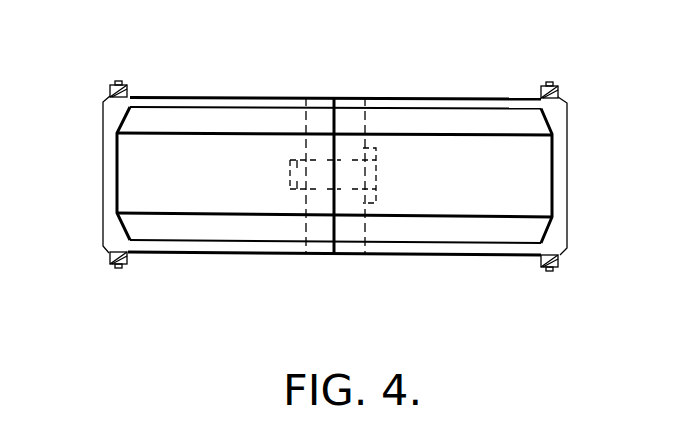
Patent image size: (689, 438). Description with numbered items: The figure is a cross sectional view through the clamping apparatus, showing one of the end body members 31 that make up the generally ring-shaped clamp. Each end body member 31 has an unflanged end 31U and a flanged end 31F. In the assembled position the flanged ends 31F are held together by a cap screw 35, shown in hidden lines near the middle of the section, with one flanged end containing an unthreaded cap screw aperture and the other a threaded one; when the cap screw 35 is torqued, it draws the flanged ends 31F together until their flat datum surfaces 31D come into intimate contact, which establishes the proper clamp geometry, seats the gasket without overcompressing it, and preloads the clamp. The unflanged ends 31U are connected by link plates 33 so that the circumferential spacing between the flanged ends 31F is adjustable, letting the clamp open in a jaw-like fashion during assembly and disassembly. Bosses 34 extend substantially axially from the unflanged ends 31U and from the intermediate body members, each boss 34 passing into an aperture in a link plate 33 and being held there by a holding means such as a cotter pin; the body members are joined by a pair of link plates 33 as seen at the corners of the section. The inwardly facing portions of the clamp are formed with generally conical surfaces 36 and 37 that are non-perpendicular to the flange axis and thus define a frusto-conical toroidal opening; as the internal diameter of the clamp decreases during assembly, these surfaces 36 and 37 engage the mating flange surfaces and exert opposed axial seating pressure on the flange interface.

The end body member 31 is at (228, 96).
The unflanged end 31U is at (108, 162).
The flanged end 31F is at (318, 97).
The datum surface 31D is at (335, 248).
The link plate 33 is at (110, 89).
The boss 34 is at (118, 81).
The cap screw 35 is at (376, 176).
The conical surface 36 is at (410, 120).
The conical surface 37 is at (233, 234).